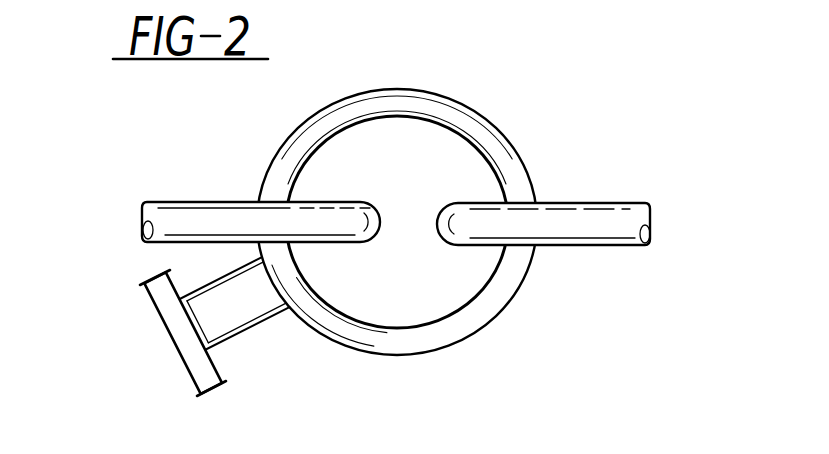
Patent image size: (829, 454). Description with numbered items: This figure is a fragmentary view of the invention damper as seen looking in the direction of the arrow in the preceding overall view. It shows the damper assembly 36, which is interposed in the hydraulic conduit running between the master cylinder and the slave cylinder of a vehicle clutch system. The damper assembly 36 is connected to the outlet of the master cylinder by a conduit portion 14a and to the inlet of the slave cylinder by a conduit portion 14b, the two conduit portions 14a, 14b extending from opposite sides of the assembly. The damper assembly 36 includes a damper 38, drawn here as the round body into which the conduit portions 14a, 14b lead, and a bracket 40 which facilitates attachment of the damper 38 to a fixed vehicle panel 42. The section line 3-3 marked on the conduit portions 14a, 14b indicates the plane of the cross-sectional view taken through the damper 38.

The section line 3- 3 is at (297, 220).
The conduit portion 14a is at (166, 202).
The conduit portion 14b is at (626, 203).
The damper assembly 36 is at (528, 110).
The damper 38 is at (274, 140).
The bracket 40 is at (248, 335).
The fixed vehicle panel 42 is at (176, 342).